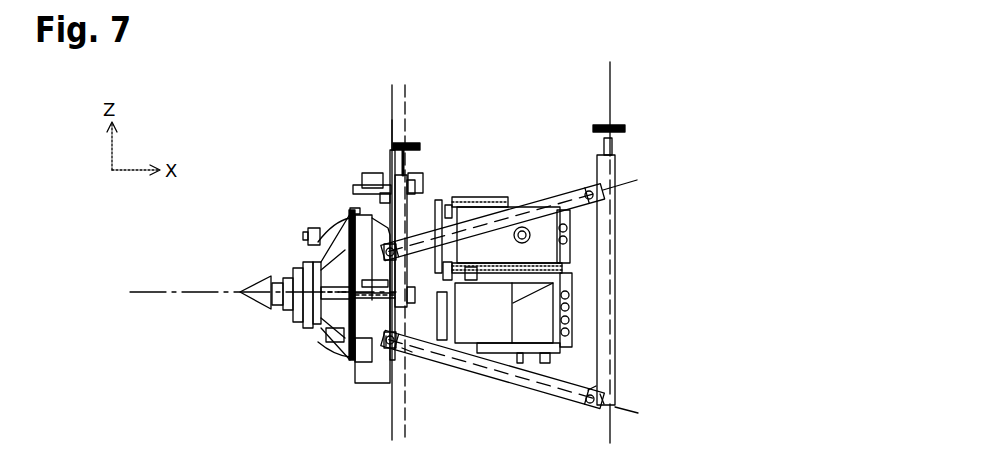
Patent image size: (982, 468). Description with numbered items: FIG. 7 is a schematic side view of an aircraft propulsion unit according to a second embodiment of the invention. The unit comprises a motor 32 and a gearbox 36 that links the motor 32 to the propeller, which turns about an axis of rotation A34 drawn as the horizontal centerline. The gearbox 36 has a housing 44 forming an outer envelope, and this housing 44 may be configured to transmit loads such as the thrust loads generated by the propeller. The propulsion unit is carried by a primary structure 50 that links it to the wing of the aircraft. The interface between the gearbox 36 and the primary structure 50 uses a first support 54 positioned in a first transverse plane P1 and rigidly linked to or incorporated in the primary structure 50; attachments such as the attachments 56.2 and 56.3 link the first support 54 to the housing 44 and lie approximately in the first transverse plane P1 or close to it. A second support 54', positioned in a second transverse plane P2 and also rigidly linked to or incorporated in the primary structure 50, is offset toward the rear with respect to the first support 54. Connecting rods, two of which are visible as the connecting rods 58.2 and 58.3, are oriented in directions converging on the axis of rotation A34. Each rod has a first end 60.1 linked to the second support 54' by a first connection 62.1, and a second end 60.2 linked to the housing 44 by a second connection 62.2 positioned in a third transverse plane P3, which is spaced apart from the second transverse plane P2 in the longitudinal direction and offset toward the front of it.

The motor 32 is at (583, 258).
The gearbox 36 is at (314, 236).
The housing 44 is at (306, 258).
The primary structure 50 is at (424, 144).
The first support 54 is at (431, 246).
The second support 54' is at (658, 271).
The attachment 56.2 is at (365, 308).
The attachment 56.3 is at (343, 174).
The connecting rod 58.2 is at (544, 183).
The connecting rod 58.3 is at (553, 395).
The first end 60.1 is at (588, 389).
The second end 60.2 is at (408, 365).
The first connection 62.1 is at (604, 398).
The second connection 62.2 is at (384, 345).
The axis of rotation A34 is at (181, 296).
The first transverse plane P1 is at (410, 118).
The second transverse plane P2 is at (612, 101).
The third transverse plane P3 is at (389, 141).